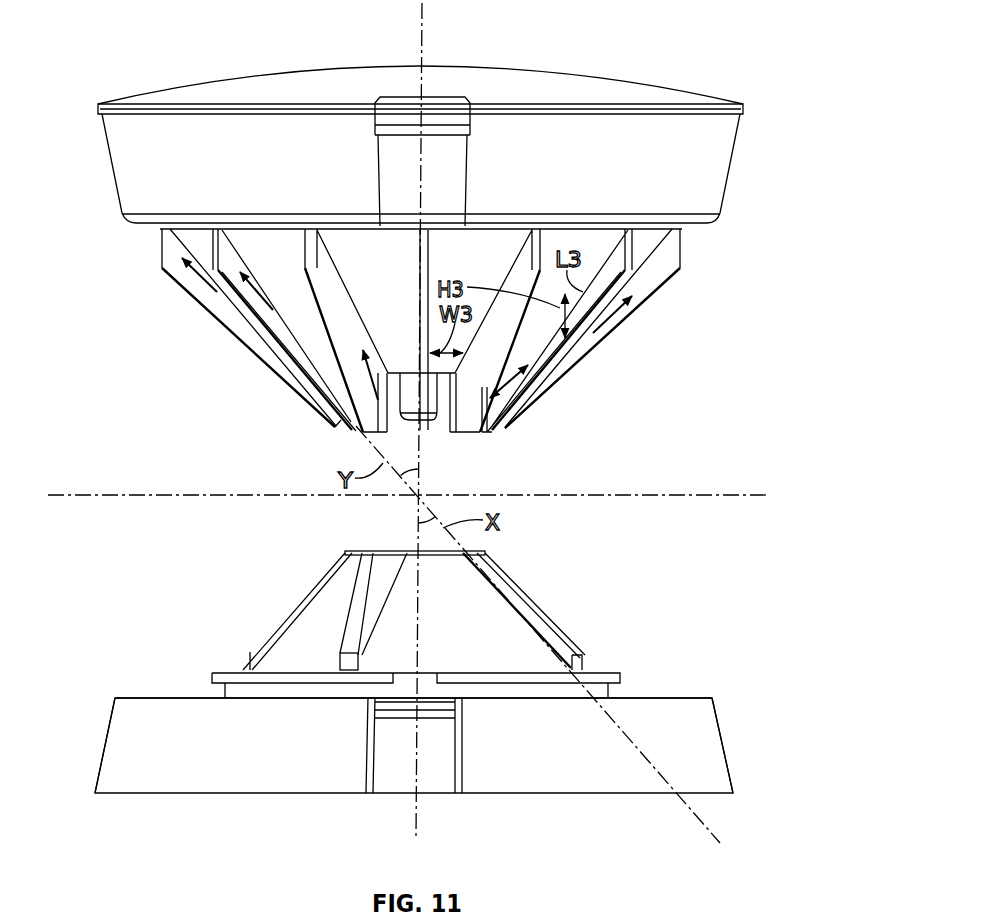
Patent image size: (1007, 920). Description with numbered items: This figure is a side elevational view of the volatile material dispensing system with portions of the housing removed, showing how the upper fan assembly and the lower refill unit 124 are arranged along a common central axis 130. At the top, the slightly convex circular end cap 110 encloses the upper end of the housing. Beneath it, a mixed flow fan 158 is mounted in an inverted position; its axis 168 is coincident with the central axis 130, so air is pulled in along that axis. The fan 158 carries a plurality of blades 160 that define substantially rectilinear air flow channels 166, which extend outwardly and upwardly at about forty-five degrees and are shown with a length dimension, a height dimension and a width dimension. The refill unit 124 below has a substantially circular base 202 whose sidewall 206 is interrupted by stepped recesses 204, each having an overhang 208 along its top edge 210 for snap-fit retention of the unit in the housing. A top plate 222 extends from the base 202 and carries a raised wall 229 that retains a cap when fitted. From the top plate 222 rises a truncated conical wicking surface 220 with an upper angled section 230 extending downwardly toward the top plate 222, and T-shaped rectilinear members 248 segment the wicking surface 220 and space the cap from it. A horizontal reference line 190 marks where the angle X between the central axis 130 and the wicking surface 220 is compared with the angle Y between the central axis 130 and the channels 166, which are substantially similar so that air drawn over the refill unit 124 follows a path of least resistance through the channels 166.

The end cap 110 is at (710, 155).
The volatile material refill unit 124 is at (700, 708).
The central axis 130 is at (423, 30).
The fan 158 is at (667, 257).
The blades 160 is at (327, 273).
The air flow channels 166 is at (195, 272).
The axis of the fan 168 is at (420, 62).
The horizontal reference axis 190 is at (730, 494).
The base 202 is at (451, 733).
The stepped recesses 204 is at (384, 772).
The sidewall 206 is at (707, 743).
The overhang 208 is at (393, 707).
The top edge 210 is at (380, 693).
The wicking surface 220 is at (503, 617).
The top plate 222 is at (690, 698).
The raised wall 229 is at (598, 675).
The upper angled section 230 is at (530, 650).
The T-shaped rectilinear members 248 is at (352, 610).